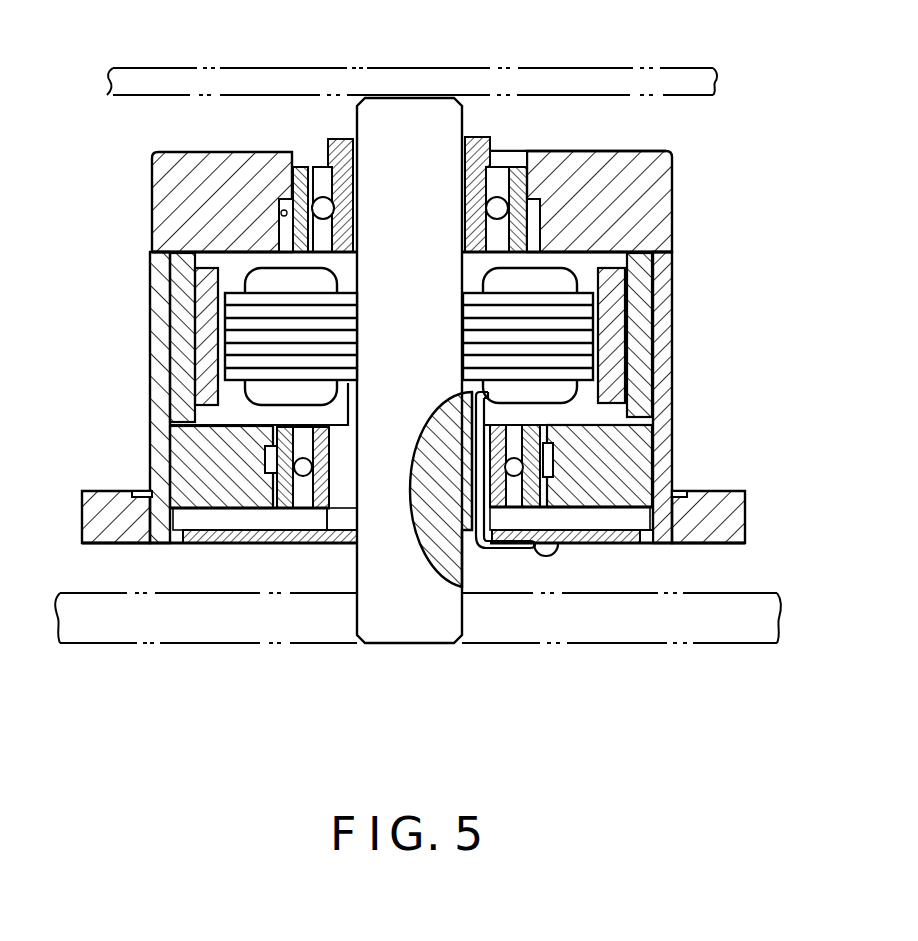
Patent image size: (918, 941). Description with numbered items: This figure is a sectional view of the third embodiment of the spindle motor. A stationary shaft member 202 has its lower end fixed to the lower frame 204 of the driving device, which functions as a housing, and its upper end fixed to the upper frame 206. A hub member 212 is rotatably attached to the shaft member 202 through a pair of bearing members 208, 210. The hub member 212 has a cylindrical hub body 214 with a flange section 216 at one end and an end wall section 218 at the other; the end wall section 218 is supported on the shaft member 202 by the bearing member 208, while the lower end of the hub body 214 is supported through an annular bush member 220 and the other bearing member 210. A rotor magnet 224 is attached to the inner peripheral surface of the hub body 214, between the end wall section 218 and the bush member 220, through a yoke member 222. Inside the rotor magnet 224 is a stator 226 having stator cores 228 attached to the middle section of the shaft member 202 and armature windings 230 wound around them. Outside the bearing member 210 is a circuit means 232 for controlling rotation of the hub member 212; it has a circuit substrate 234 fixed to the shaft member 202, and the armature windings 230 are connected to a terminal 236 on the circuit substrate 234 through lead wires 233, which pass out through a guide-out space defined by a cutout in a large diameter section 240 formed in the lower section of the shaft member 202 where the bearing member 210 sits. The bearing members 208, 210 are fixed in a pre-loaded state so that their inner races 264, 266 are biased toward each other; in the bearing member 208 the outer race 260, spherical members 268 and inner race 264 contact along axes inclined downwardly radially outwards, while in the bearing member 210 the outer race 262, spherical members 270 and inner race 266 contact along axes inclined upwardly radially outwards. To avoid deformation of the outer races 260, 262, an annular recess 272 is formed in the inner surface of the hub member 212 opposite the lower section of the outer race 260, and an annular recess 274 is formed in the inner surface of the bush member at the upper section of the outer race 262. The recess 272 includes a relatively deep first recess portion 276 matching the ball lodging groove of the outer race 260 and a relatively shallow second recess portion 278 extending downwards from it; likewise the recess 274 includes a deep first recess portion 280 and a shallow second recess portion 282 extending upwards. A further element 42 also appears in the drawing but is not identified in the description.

The lever arm 42 is at (486, 550).
The stationary shaft member 202 is at (352, 568).
The lower frame 204 is at (642, 645).
The upper frame 206 is at (550, 66).
The bearing member 208 is at (505, 158).
The bearing member 210 is at (515, 514).
The hub member 212 is at (674, 213).
The hub body 214 is at (660, 347).
The flange section 216 is at (735, 507).
The end wall section 218 is at (627, 167).
The annular bush member 220 is at (640, 450).
The yoke member 222 is at (637, 300).
The rotor magnet 224 is at (607, 387).
The stator 226 is at (250, 250).
The stator cores 228 is at (240, 328).
The armature windings 230 is at (257, 393).
The circuit means 232 is at (205, 546).
The lead wires 233 is at (478, 465).
The circuit substrate 234 is at (252, 537).
The terminal 236 is at (560, 548).
The large diameter section 240 is at (338, 530).
The outer race 260 is at (542, 165).
The outer race 262 is at (652, 497).
The inner race 264 is at (470, 185).
The inner race 266 is at (445, 515).
The spherical members 268 is at (489, 212).
The spherical members 270 is at (470, 445).
The annular recess 272 is at (267, 197).
The annular recess 274 is at (260, 480).
The first recess portion 276 is at (255, 262).
The second recess portion 278 is at (217, 273).
The first recess portion 280 is at (265, 468).
The second recess portion 282 is at (275, 425).